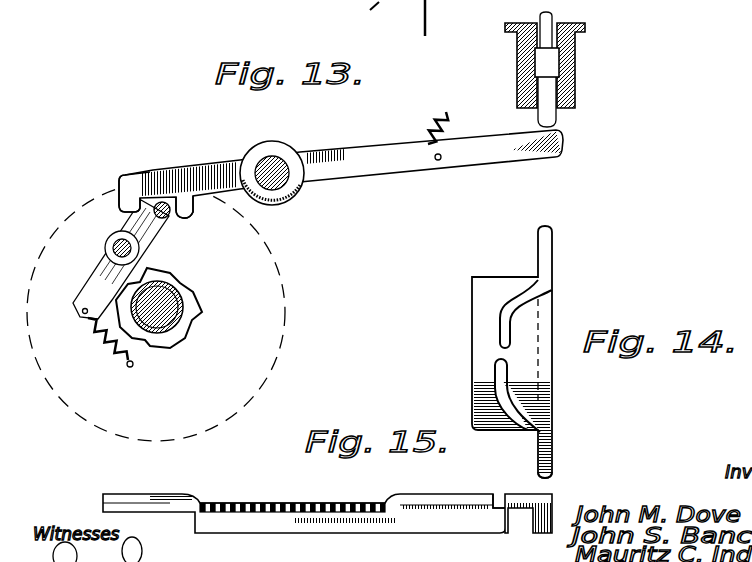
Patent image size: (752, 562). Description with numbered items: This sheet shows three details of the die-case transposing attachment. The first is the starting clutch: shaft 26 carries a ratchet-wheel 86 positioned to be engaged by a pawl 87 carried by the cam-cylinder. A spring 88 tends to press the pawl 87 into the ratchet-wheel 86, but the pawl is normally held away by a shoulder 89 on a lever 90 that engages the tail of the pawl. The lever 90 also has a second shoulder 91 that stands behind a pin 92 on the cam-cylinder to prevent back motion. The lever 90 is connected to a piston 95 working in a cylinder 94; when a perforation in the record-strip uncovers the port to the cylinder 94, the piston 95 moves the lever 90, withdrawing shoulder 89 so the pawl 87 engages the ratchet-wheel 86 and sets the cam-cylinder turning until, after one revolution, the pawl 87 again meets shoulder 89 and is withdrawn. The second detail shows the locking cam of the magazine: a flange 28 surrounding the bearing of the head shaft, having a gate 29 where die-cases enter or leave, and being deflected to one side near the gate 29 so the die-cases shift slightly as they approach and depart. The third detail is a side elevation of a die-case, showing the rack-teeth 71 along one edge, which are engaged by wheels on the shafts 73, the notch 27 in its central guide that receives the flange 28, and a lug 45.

In FIG. 13, the shaft 26 is at (177, 303).
In FIG. 13, the ratchet-wheel 86 is at (198, 315).
In FIG. 13, the pawl 87 is at (90, 284).
In FIG. 13, the spring 88 is at (104, 349).
In FIG. 13, the shoulder 89 is at (118, 208).
In FIG. 13, the lever 90 is at (341, 165).
In FIG. 13, the second shoulder 91 is at (180, 203).
In FIG. 13, the pin 92 is at (162, 219).
In FIG. 13, the cylinder 94 is at (563, 69).
In FIG. 13, the piston 95 is at (537, 58).
In FIG. 14, the gate 29 is at (497, 352).
In FIG. 14, the flange 28 is at (553, 478).
In FIG. 15, the shaft 73 is at (304, 501).
In FIG. 15, the rack-teeth 71 is at (293, 505).
In FIG. 15, the notch 27 is at (501, 497).
In FIG. 15, the lug 45 is at (515, 528).